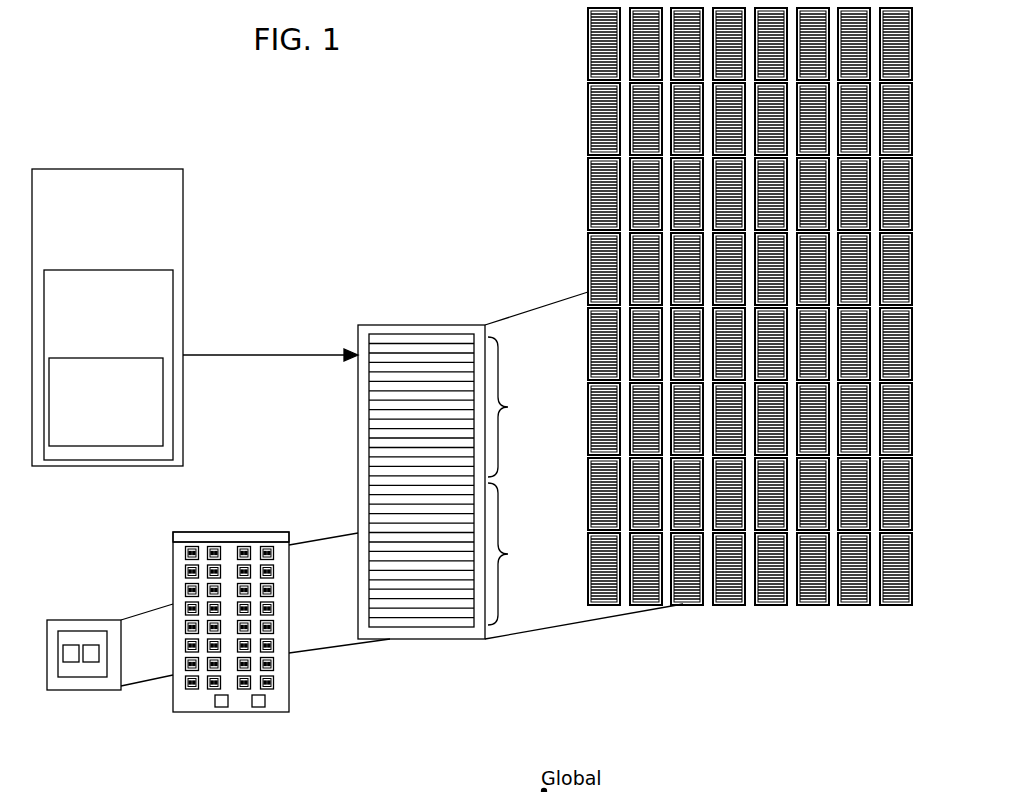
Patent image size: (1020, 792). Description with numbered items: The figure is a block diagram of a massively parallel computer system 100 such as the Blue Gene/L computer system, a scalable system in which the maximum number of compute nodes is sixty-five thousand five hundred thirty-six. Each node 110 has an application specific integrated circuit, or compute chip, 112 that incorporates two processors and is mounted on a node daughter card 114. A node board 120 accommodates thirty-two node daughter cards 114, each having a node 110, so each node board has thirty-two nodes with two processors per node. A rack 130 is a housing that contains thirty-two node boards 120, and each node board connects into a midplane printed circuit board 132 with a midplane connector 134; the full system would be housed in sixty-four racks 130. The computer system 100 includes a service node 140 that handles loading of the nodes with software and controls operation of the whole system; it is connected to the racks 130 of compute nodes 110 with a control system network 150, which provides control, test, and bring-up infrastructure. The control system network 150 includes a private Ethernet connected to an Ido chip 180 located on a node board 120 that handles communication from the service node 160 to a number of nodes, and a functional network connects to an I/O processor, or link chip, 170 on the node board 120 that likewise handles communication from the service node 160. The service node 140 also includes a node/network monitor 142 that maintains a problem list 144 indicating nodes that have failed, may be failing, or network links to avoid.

The massively parallel computer system 100 is at (226, 166).
The node 110 is at (64, 619).
The application specific integrated circuit (compute chip) 112 is at (58, 678).
The node daughter card 114 is at (102, 692).
The node board 120 is at (289, 590).
The rack 130 is at (398, 323).
The midplane printed circuit board 132 is at (538, 481).
The midplane connector 134 is at (172, 537).
The service node 140 is at (107, 317).
The node/network monitor 142 is at (174, 287).
The problem list 144 is at (163, 427).
The control system network 150 is at (226, 353).
The service node 160 is at (273, 663).
The I/O processor 170 is at (218, 708).
The Ido chip 180 is at (262, 709).